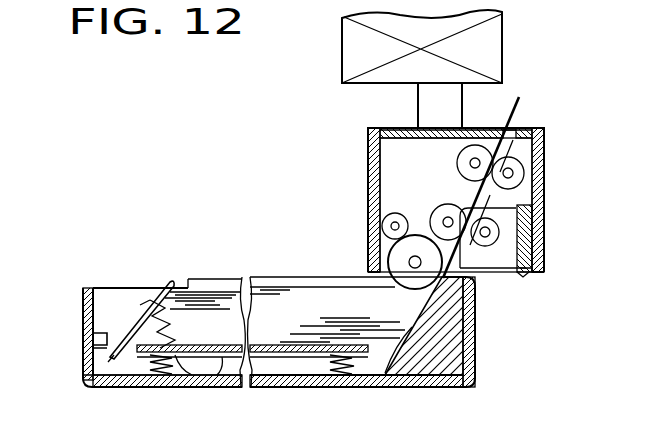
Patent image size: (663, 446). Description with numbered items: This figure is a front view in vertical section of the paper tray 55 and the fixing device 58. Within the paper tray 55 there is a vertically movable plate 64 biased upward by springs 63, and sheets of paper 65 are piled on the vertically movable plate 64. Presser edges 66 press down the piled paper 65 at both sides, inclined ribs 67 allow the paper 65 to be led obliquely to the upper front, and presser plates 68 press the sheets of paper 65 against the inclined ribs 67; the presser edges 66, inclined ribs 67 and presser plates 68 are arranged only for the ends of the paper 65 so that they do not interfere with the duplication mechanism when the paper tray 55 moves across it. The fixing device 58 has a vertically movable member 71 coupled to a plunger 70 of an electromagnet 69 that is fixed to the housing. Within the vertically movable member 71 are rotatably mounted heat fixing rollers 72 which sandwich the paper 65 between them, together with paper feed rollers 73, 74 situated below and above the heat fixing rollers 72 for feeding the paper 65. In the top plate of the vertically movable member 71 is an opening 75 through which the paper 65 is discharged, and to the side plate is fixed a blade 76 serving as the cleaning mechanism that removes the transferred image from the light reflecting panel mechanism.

The paper tray 55 is at (83, 316).
The fixing device 58 is at (368, 170).
The springs 63 is at (155, 380).
The vertically movable plate 64 is at (222, 375).
The paper 65 is at (505, 115).
The presser edges 66 is at (272, 277).
The inclined ribs 67 is at (412, 375).
The presser plates 68 is at (147, 300).
The electromagnet 69 is at (348, 28).
The plunger 70 is at (428, 92).
The vertically movable member 71 is at (398, 128).
The heat fixing rollers 72 is at (545, 225).
The paper feed roller 73 is at (428, 268).
The paper feed roller 74 is at (518, 170).
The opening 75 is at (518, 130).
The blade 76 is at (523, 275).